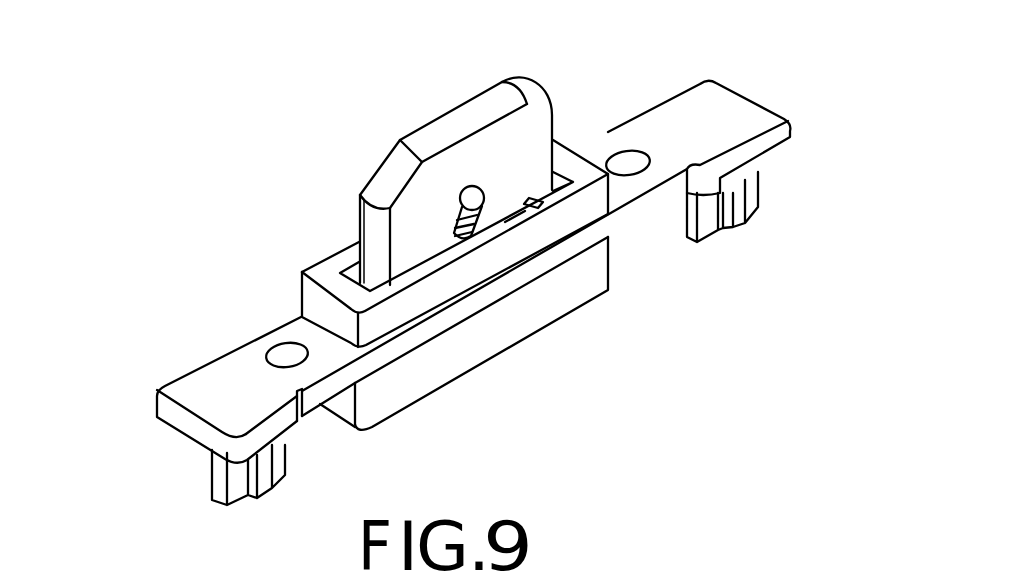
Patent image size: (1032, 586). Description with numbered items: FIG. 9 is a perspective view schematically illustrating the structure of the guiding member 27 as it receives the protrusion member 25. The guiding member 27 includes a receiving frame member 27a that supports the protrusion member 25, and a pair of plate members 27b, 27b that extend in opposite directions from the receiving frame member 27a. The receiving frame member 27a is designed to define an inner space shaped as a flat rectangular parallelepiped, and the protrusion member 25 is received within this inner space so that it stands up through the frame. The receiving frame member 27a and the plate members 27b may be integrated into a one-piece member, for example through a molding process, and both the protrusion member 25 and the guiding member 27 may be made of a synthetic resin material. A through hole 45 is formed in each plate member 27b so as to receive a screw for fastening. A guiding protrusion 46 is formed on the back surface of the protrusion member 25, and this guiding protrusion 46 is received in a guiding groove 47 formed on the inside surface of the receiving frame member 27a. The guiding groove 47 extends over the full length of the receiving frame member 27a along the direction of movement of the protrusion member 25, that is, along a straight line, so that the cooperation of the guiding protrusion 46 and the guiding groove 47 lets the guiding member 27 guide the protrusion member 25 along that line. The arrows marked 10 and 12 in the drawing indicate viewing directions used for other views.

The section line 10-10 arrow 10 is at (150, 445).
The section line 12-12 arrow 12 is at (264, 155).
The protrusion member 25 is at (502, 82).
The guiding member 27 is at (302, 272).
The receiving frame member 27a is at (448, 364).
The plate member 27b is at (203, 374).
The through hole 45 is at (268, 347).
The guiding protrusion 46 is at (543, 203).
The guiding groove 47 is at (530, 208).